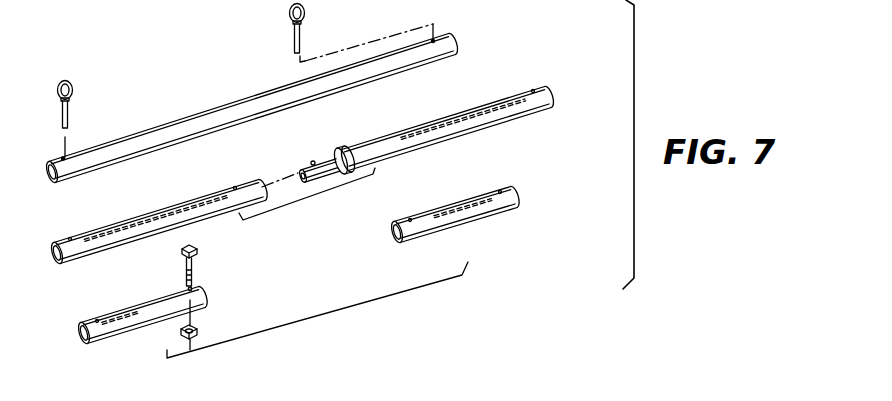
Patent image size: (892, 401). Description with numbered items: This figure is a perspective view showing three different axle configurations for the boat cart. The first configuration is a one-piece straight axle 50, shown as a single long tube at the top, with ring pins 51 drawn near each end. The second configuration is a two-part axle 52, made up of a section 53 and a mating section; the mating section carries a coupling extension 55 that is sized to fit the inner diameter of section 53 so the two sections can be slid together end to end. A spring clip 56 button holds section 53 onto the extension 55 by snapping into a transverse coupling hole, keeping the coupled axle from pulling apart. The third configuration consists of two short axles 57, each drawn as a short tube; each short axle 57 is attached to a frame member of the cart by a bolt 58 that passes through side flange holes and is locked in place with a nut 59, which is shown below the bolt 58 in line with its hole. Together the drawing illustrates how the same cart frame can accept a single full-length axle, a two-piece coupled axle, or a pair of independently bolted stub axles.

The straight axle 50 is at (198, 93).
The ring pin 51 is at (72, 78).
The two-part axle 52 is at (532, 81).
The section 53 is at (443, 98).
The coupling extension 55 is at (301, 172).
The spring clip 56 is at (315, 161).
The short axle 57 is at (472, 197).
The bolt 58 is at (198, 258).
The nut 59 is at (198, 333).